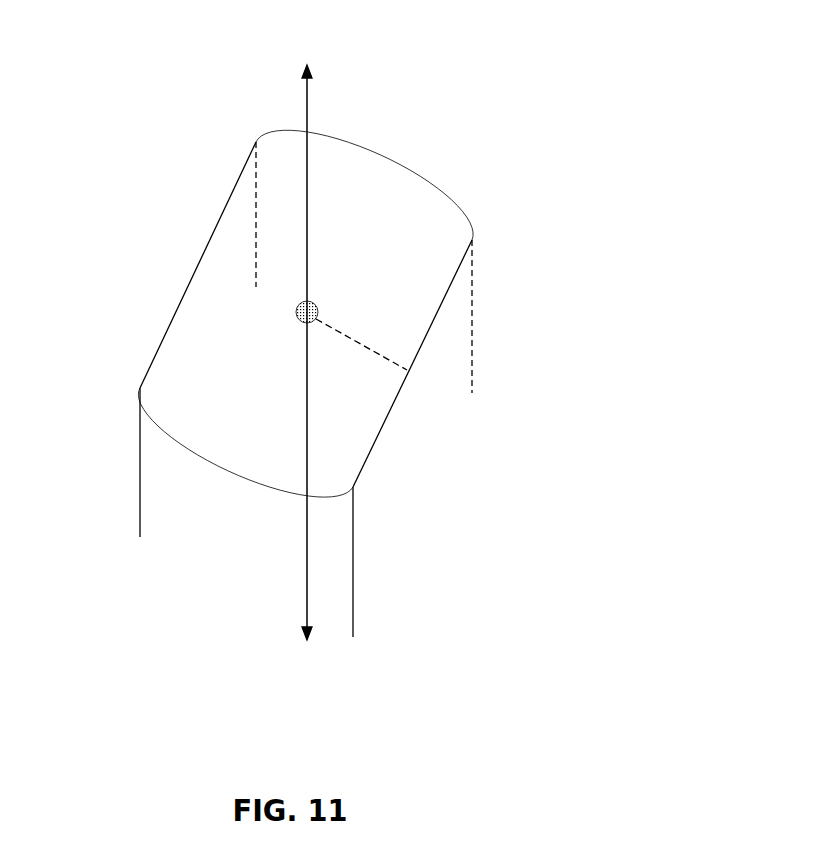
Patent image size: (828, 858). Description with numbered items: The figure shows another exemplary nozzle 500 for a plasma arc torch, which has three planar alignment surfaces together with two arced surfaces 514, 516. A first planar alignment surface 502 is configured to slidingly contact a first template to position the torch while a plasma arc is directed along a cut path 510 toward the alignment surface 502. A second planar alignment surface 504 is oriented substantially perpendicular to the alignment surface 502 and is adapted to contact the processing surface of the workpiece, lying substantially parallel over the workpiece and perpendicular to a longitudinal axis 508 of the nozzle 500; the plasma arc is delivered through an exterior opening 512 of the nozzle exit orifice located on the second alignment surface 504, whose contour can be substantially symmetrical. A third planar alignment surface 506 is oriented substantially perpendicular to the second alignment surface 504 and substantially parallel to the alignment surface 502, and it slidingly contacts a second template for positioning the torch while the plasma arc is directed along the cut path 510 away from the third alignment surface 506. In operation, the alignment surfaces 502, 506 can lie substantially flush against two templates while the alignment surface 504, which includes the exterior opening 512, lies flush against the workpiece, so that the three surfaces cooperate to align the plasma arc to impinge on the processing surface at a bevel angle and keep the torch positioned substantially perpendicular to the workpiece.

The nozzle 500 is at (372, 350).
The planar alignment surface 502 is at (390, 413).
The second planar alignment surface 504 is at (374, 203).
The third planar alignment surface 506 is at (210, 330).
The longitudinal axis 508 is at (305, 373).
The cut path 510 is at (355, 340).
The exterior opening 512 is at (297, 317).
The arced surface 514 is at (220, 473).
The arced surface 516 is at (282, 135).